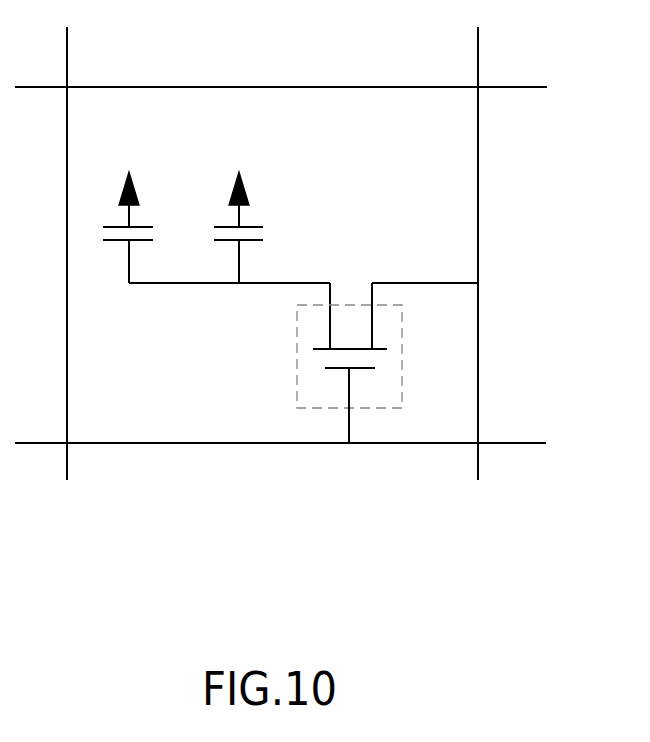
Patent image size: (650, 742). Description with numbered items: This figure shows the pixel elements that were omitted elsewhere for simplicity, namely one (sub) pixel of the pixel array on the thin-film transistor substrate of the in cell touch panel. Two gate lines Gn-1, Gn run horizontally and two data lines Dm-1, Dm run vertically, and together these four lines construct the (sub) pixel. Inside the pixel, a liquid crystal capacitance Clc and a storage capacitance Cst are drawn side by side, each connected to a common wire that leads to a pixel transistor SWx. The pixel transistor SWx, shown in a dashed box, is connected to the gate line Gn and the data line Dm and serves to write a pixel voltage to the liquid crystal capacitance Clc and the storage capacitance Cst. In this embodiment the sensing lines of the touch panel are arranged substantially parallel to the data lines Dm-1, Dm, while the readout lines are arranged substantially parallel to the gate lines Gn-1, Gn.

The data line Dm-1 is at (66, 271).
The data line Dm is at (484, 271).
The gate line Gn-1 is at (315, 86).
The gate line Gn is at (307, 438).
The storage capacitance Cst is at (146, 227).
The liquid crystal capacitance Clc is at (261, 227).
The pixel transistor SWx is at (297, 355).